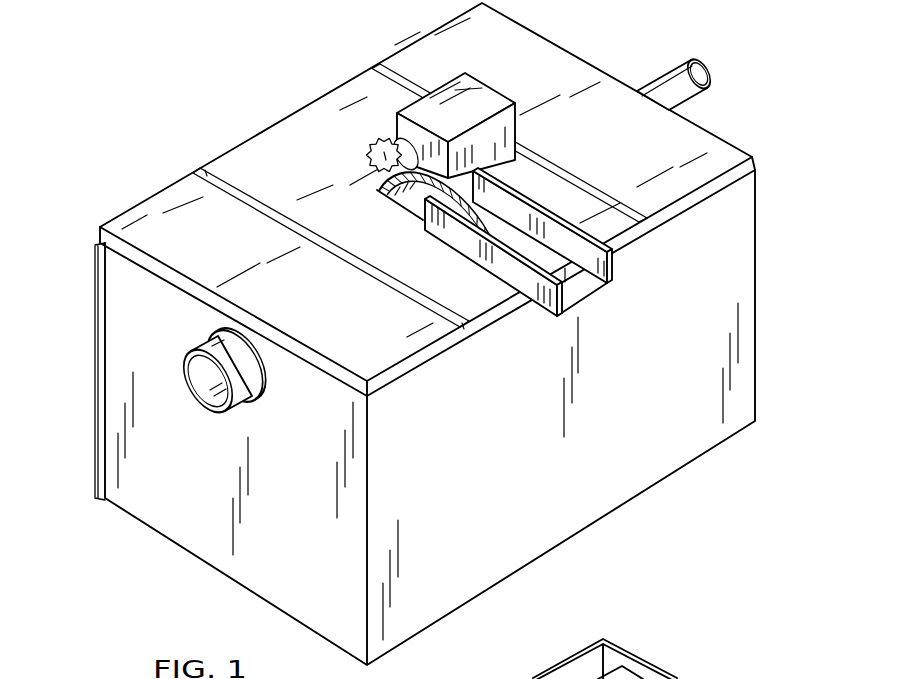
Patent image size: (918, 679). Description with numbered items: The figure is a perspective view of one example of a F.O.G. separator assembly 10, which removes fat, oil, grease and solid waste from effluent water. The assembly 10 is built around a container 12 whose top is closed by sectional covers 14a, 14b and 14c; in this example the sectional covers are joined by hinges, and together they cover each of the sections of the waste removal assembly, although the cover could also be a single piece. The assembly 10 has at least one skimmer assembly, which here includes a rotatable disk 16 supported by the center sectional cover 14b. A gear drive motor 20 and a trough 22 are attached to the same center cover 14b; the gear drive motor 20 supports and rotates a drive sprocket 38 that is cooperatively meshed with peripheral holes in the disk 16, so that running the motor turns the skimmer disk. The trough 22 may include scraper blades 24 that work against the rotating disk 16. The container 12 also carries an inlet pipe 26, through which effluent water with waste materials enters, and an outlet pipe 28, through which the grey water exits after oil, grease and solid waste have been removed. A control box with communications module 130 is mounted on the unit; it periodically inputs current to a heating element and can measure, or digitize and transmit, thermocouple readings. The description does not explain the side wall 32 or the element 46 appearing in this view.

In FIG. 1, the F.O.G. separator assembly 10 is at (132, 62).
In FIG. 1, the container 12 is at (753, 164).
In FIG. 1, the sectional cover 14a is at (373, 331).
In FIG. 1, the center sectional cover 14b is at (460, 280).
In FIG. 1, the sectional cover 14c is at (660, 157).
In FIG. 1, the rotatable disk 16 is at (418, 211).
In FIG. 1, the gear drive motor 20 is at (425, 100).
In FIG. 1, the trough 22 is at (577, 283).
In FIG. 1, the scraper blades 24 is at (540, 235).
In FIG. 1, the inlet pipe 26 is at (202, 347).
In FIG. 1, the outlet pipe 28 is at (680, 67).
In FIG. 2, the outlet pipe 28 is at (787, 678).
In FIG. 1, the side wall 32 is at (528, 438).
In FIG. 1, the drive sprocket 38 is at (375, 152).
In FIG. 1, the control box with communications module 130 is at (470, 92).
In FIG. 2, the pump housing 46 is at (598, 677).